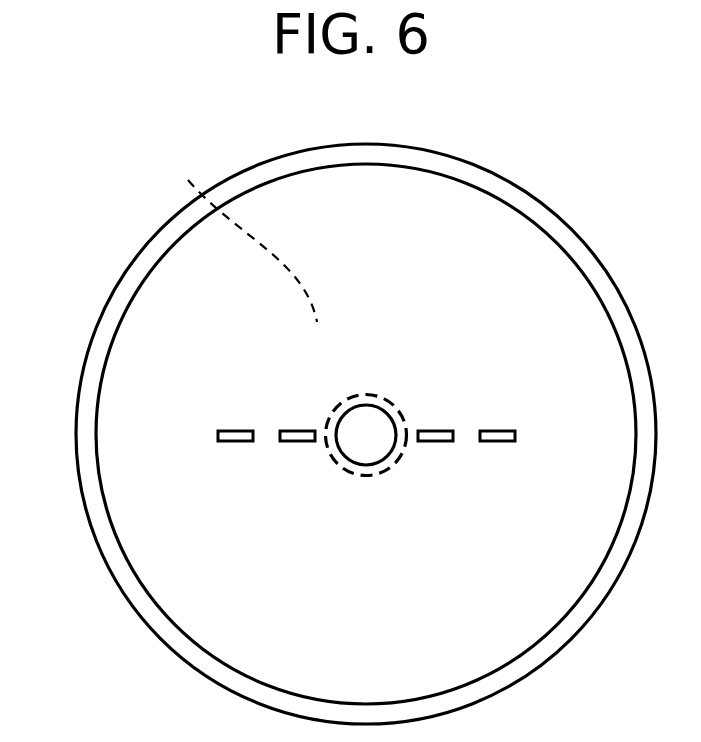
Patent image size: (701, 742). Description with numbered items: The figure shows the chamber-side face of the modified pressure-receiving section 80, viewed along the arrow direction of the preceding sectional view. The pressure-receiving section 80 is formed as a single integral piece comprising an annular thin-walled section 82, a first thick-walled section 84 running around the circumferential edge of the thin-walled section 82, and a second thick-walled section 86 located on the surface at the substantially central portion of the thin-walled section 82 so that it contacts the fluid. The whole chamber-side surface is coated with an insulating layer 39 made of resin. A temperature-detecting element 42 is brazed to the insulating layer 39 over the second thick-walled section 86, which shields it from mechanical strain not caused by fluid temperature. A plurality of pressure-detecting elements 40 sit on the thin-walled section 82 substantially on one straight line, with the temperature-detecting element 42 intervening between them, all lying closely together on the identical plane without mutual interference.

The pressure-receiving section 80 is at (217, 298).
The first thick-walled section 84 is at (493, 188).
The insulating layer 39 is at (368, 210).
The thin-walled section 82 is at (240, 232).
The temperature-detecting element 42 is at (365, 423).
The second thick-walled section 86 is at (372, 477).
The pressure-detecting elements 40 is at (236, 432).